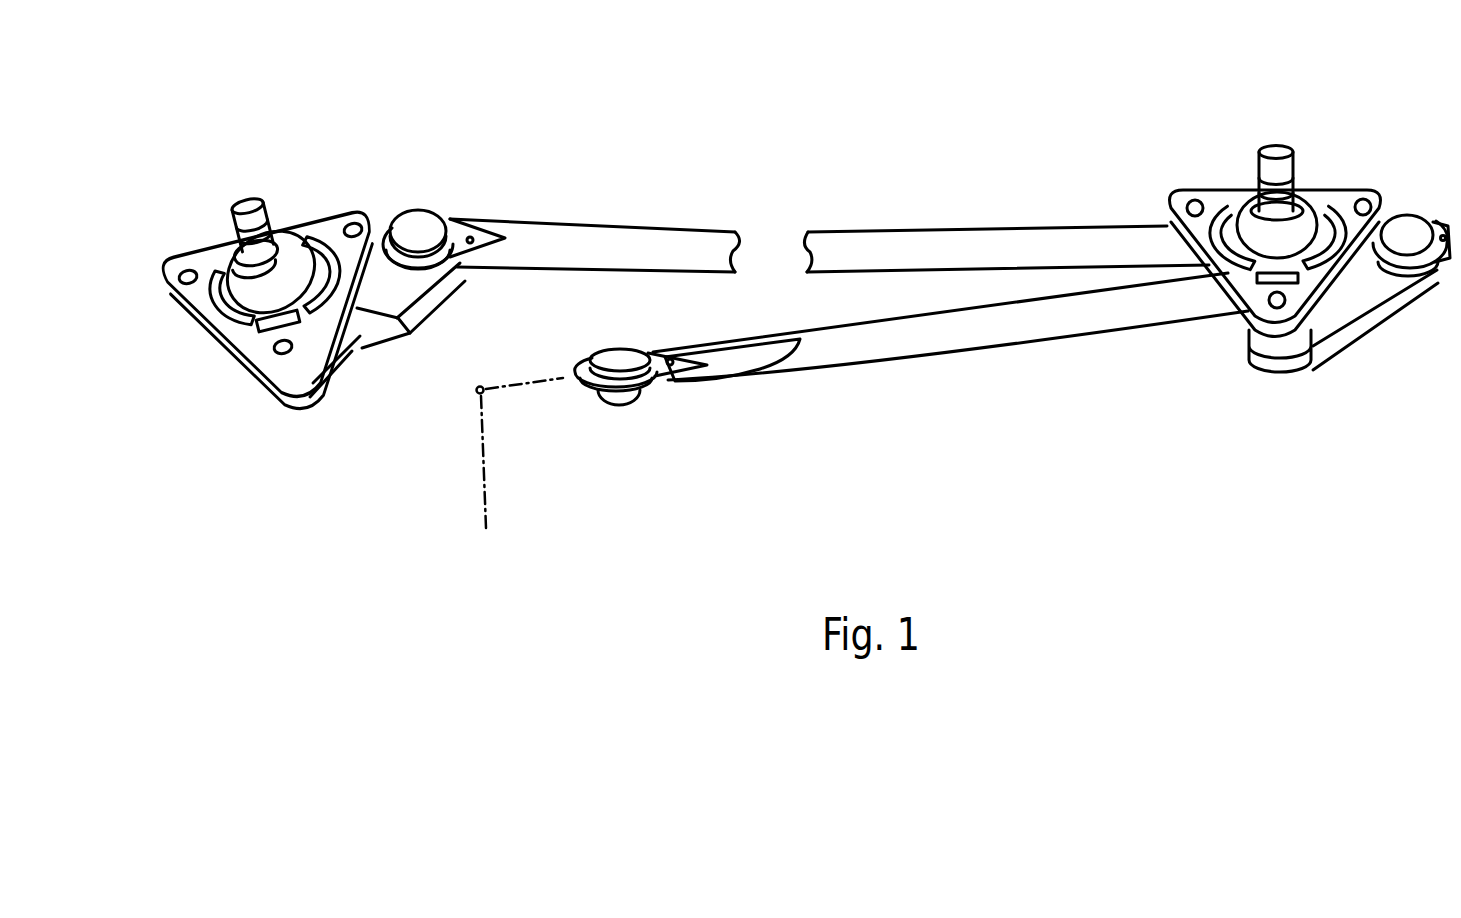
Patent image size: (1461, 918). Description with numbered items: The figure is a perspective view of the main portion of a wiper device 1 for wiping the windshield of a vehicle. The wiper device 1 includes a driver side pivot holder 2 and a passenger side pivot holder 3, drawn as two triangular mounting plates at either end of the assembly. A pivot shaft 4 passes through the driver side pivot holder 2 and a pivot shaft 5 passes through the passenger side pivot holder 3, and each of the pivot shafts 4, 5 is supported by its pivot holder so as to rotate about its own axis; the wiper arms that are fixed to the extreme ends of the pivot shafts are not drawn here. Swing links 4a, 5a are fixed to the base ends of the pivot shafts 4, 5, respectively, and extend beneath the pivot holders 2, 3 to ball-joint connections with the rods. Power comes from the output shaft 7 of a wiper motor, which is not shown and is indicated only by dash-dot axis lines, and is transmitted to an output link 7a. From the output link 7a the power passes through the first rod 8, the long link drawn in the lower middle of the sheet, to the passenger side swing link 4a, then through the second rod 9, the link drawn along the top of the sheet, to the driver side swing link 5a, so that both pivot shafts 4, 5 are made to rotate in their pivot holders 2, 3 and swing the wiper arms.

The wiper device 1 is at (300, 462).
The driver side pivot holder 2 is at (293, 268).
The passenger side pivot holder 3 is at (1300, 223).
The pivot shaft 4 is at (247, 203).
The passenger side swing link 4a is at (402, 303).
The pivot shaft 5 is at (1274, 157).
The driver side swing link 5a is at (1347, 312).
The output shaft 7 is at (492, 480).
The output link 7a is at (540, 397).
The first rod 8 is at (860, 358).
The second rod 9 is at (657, 240).